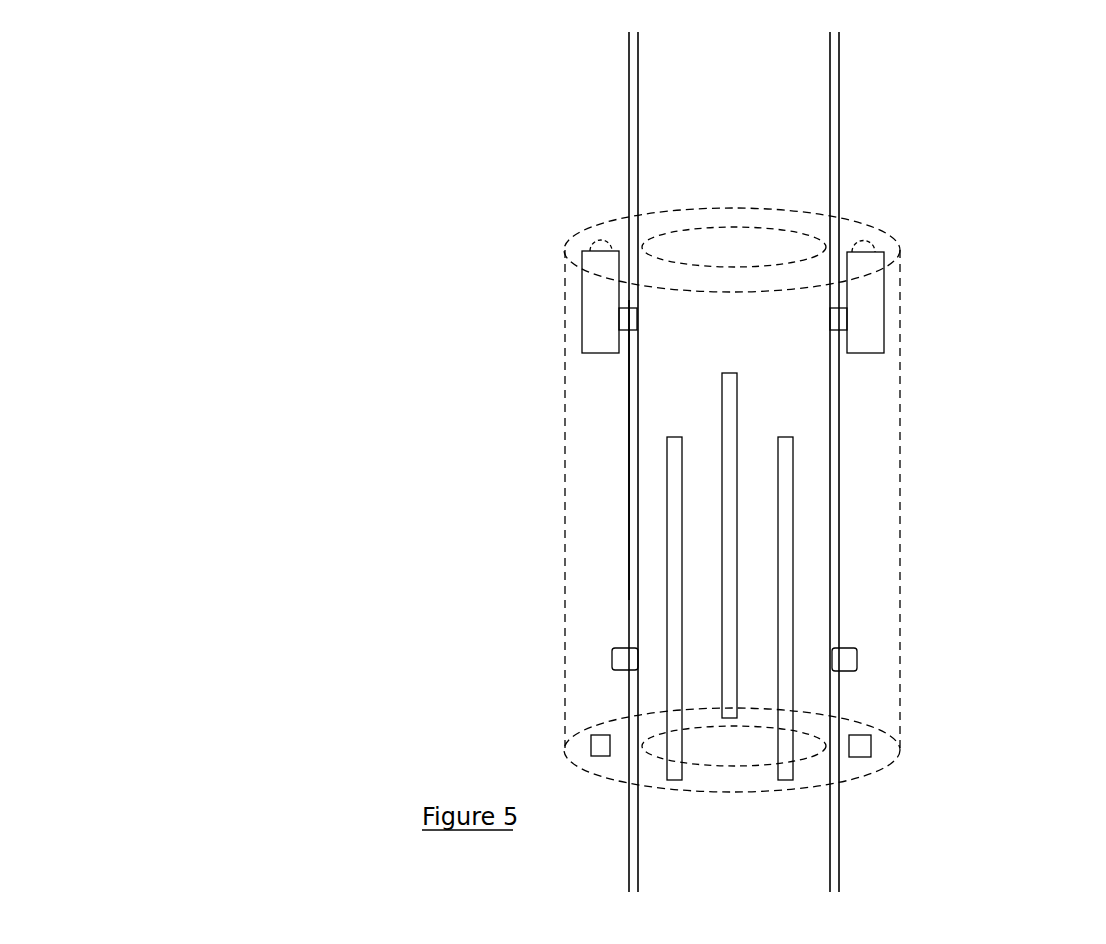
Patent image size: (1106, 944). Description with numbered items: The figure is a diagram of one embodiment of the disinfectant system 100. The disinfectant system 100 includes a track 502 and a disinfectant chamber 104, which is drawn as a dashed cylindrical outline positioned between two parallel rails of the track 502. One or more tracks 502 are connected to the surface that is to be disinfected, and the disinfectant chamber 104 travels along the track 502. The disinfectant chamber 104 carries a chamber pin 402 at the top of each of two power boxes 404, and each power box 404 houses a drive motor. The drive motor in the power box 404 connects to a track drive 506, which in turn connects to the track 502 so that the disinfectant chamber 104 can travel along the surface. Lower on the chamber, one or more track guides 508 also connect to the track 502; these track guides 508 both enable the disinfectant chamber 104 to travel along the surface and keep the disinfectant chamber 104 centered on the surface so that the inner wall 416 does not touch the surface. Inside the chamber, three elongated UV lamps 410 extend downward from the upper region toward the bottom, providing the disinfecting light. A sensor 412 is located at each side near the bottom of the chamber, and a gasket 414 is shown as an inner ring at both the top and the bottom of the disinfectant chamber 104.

The disinfectant system 100 is at (225, 228).
The disinfectant chamber 104 is at (563, 287).
The chamber pin 402 is at (602, 238).
The power box 404 is at (598, 290).
The UV lamp 410 is at (729, 718).
The sensor 412 is at (590, 747).
The gasket 414 is at (695, 228).
The inner wall 416 is at (628, 525).
The track 502 is at (630, 142).
The track drive 506 is at (623, 325).
The track guide 508 is at (612, 660).